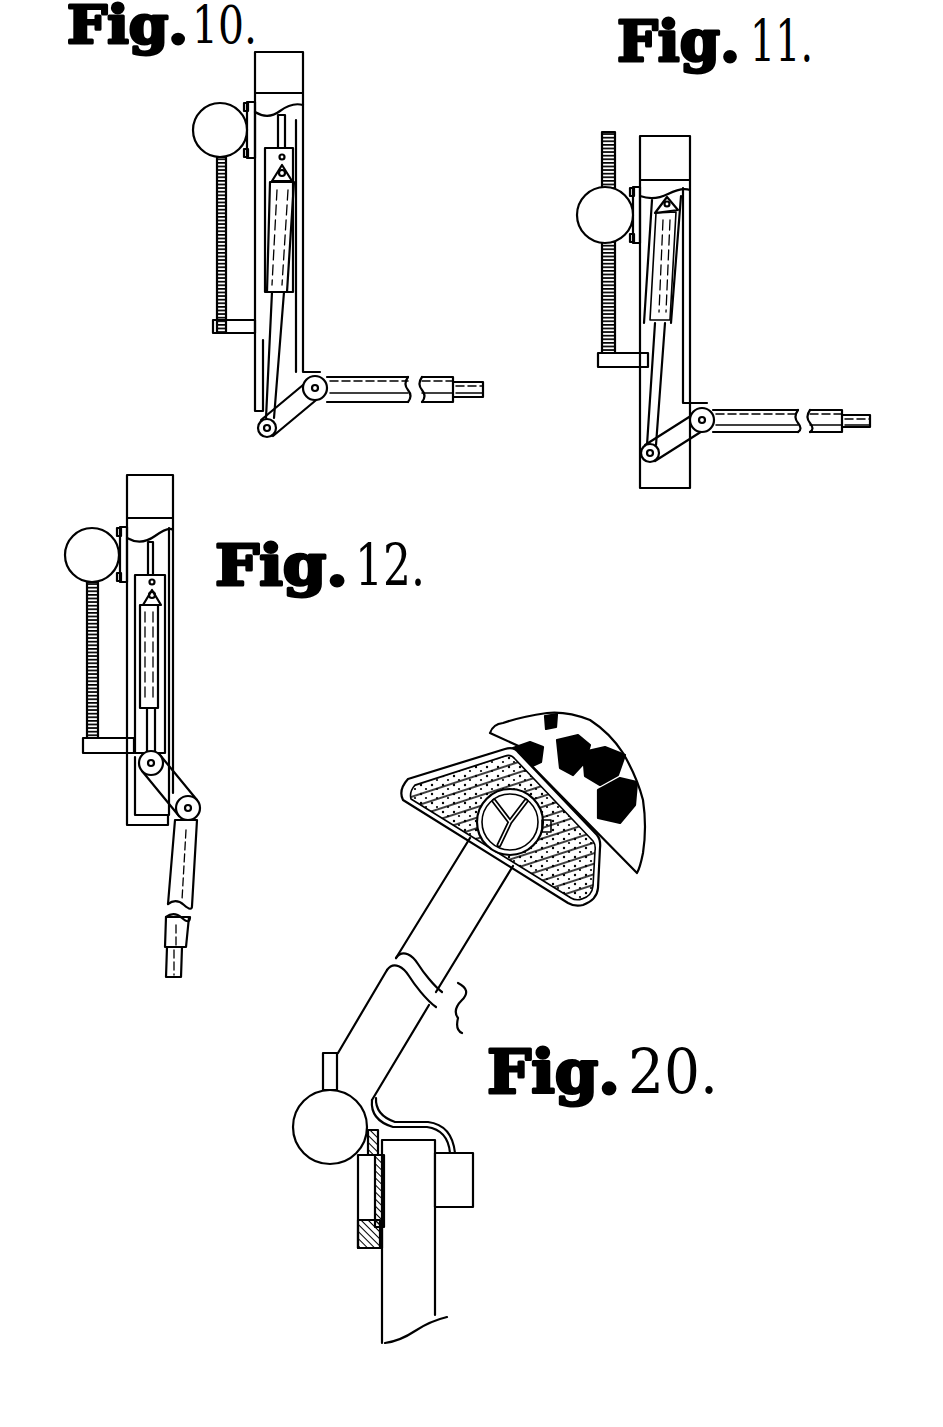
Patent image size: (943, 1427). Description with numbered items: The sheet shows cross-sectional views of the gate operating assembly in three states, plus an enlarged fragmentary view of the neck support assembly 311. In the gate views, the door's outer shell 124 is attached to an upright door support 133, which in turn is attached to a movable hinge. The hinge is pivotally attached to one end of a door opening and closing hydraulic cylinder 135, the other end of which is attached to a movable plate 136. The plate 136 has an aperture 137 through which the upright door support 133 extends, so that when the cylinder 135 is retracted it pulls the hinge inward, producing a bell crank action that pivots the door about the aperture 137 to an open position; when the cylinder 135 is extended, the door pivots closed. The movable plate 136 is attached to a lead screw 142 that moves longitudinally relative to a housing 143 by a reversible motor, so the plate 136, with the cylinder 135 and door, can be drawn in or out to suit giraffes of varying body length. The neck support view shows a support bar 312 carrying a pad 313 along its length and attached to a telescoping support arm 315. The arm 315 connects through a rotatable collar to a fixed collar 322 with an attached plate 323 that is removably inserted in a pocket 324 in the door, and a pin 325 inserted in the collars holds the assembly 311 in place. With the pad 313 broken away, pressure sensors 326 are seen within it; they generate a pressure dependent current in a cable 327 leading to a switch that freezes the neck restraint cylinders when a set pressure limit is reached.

In FIG. 10, the outer shell 124 is at (393, 380).
In FIG. 11, the outer shell 124 is at (782, 412).
In FIG. 10, the upright door support 133 is at (320, 400).
In FIG. 11, the upright door support 133 is at (713, 408).
In FIG. 10, the door opening and closing hydraulic cylinder 135 is at (278, 251).
In FIG. 12, the door opening and closing hydraulic cylinder 135 is at (152, 647).
In FIG. 10, the movable plate 136 is at (296, 178).
In FIG. 12, the movable plate 136 is at (159, 589).
In FIG. 10, the aperture 137 is at (327, 377).
In FIG. 10, the lead screw 142 is at (219, 262).
In FIG. 11, the lead screw 142 is at (602, 311).
In FIG. 12, the lead screw 142 is at (88, 663).
In FIG. 10, the housing 143 is at (193, 132).
In FIG. 11, the housing 143 is at (578, 218).
In FIG. 20, the neck support assembly 311 is at (486, 841).
In FIG. 20, the support bar 312 is at (462, 838).
In FIG. 20, the pad 313 is at (443, 787).
In FIG. 20, the telescoping support arm 315 is at (433, 928).
In FIG. 20, the fixed collar 322 is at (335, 1157).
In FIG. 20, the plate 323 is at (363, 1243).
In FIG. 20, the pocket 324 is at (367, 1197).
In FIG. 20, the pin 325 is at (322, 1070).
In FIG. 20, the pressure sensor 326 is at (484, 768).
In FIG. 20, the cable 327 is at (463, 1183).